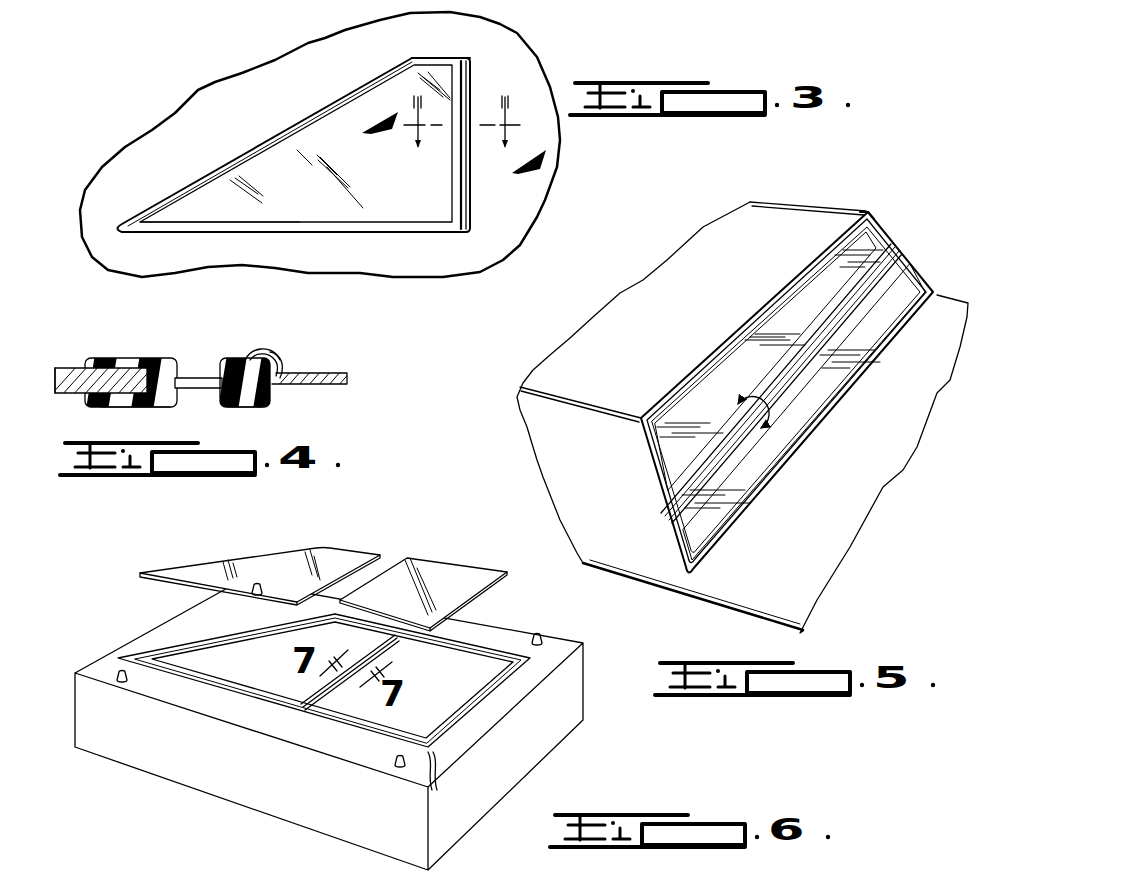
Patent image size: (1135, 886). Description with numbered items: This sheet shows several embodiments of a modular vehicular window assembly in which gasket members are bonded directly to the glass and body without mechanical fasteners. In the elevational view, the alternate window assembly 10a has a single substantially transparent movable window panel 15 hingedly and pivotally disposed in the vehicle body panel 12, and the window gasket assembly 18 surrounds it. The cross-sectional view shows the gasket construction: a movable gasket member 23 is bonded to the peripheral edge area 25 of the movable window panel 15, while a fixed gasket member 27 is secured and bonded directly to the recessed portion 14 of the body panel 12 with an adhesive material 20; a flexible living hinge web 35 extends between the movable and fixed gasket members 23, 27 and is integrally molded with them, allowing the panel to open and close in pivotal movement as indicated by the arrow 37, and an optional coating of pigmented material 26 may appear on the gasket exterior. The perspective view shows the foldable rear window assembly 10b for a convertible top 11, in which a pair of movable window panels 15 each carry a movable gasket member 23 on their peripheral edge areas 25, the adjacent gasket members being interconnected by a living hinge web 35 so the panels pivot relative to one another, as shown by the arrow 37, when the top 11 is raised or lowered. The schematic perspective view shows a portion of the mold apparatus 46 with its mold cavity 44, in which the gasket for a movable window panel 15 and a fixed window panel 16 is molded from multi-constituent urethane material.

In FIG. 3, the modular vehicular window assembly 10a is at (262, 125).
In FIG. 5, the modular window assembly 10b is at (913, 248).
In FIG. 3, the convertible top 11 is at (463, 60).
In FIG. 5, the convertible top 11 is at (800, 216).
In FIG. 3, the vehicle body panel 12 is at (514, 217).
In FIG. 4, the vehicle body panel 12 is at (352, 375).
In FIG. 4, the recessed portion 14 is at (245, 366).
In FIG. 3, the movable window panel 15 is at (302, 203).
In FIG. 5, the movable window panel 15 is at (818, 316).
In FIG. 6, the movable window panel 15 is at (337, 555).
In FIG. 6, the fixed window panel 16 is at (437, 573).
In FIG. 3, the window gasket assembly 18 is at (428, 60).
In FIG. 5, the window gasket assembly 18 is at (886, 224).
In FIG. 4, the adhesive material 20 is at (271, 369).
In FIG. 3, the movable gasket member 23 is at (233, 160).
In FIG. 4, the movable gasket member 23 is at (155, 372).
In FIG. 5, the movable gasket member 23 is at (920, 263).
In FIG. 4, the peripheral edge area 25 is at (128, 380).
In FIG. 5, the peripheral edge area 25 is at (917, 288).
In FIG. 4, the coating of pigmented material 26 is at (148, 403).
In FIG. 3, the fixed gasket member 27 is at (468, 76).
In FIG. 4, the fixed gasket member 27 is at (244, 362).
In FIG. 4, the flexible living hinge web 35 is at (197, 378).
In FIG. 5, the flexible living hinge web 35 is at (713, 466).
In FIG. 3, the arrow 37 is at (235, 203).
In FIG. 4, the arrow 37 is at (74, 414).
In FIG. 5, the arrow 37 is at (770, 413).
In FIG. 6, the mold cavity 44 is at (487, 647).
In FIG. 6, the mold apparatus 46 is at (540, 772).